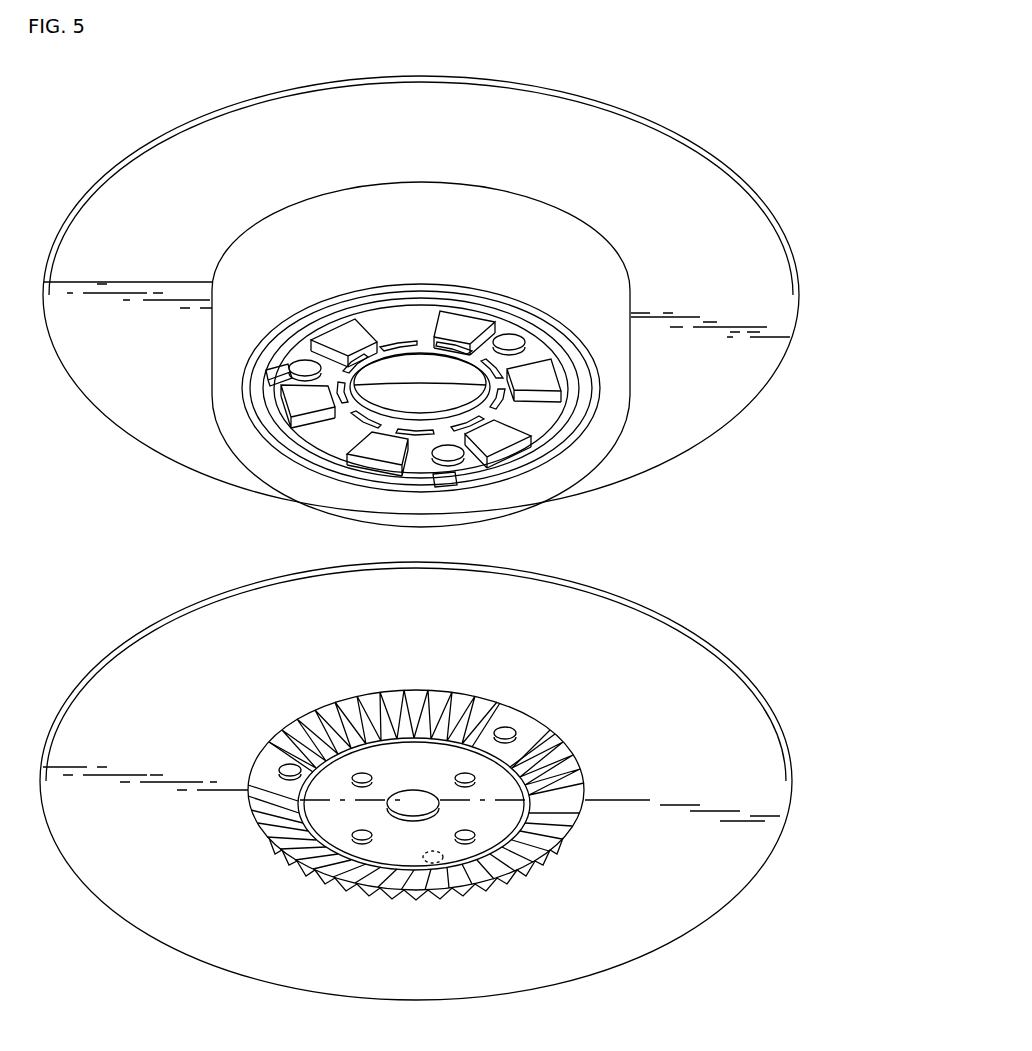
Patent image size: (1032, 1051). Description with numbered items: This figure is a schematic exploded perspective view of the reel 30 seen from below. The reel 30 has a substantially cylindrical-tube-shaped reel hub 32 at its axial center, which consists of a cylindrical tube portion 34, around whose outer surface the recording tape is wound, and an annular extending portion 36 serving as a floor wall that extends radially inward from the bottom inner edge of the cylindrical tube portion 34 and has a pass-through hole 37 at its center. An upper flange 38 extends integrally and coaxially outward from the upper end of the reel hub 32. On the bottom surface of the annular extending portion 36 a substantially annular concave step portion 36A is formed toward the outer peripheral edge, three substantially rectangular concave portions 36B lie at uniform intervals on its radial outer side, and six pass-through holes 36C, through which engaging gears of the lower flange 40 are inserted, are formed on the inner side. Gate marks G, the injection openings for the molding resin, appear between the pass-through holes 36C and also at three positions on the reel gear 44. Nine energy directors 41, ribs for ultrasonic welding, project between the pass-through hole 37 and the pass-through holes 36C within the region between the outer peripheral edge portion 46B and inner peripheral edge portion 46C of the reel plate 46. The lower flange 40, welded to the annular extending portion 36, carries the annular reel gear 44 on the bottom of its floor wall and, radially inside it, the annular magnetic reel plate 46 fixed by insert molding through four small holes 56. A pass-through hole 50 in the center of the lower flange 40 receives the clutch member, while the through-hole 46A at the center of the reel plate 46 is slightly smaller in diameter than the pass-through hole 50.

The reel 30 is at (692, 99).
The reel hub 32 is at (686, 211).
The cylindrical tube portion 34 is at (588, 263).
The annular extending portion 36 is at (553, 396).
The concave step portion 36A is at (297, 455).
The concave portions 36B is at (266, 378).
The pass-through holes 36C is at (335, 345).
The pass-through hole 37 is at (388, 410).
The upper flange 38 is at (707, 188).
The lower flange 40 is at (700, 677).
The energy directors 41 is at (362, 430).
The reel gear 44 is at (556, 826).
The reel plate 46 is at (395, 875).
The through-hole 46A is at (432, 866).
The outer peripheral edge portion 46B is at (270, 765).
The inner peripheral edge portion 46C is at (376, 858).
The pass-through hole 50 is at (433, 857).
The small holes 56 is at (470, 846).
The gate marks G is at (301, 366).